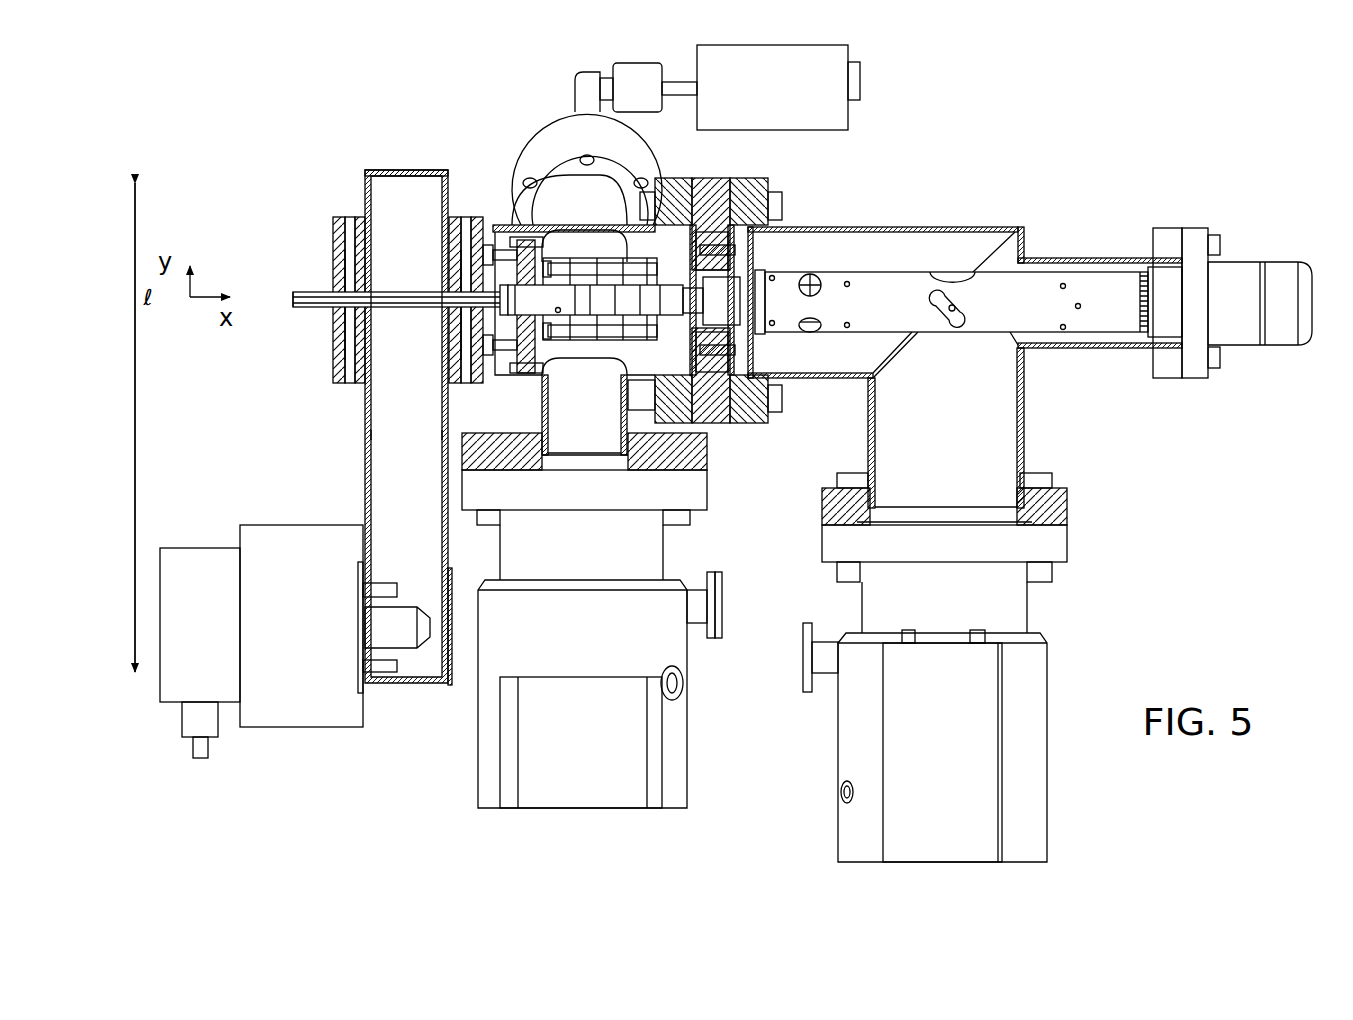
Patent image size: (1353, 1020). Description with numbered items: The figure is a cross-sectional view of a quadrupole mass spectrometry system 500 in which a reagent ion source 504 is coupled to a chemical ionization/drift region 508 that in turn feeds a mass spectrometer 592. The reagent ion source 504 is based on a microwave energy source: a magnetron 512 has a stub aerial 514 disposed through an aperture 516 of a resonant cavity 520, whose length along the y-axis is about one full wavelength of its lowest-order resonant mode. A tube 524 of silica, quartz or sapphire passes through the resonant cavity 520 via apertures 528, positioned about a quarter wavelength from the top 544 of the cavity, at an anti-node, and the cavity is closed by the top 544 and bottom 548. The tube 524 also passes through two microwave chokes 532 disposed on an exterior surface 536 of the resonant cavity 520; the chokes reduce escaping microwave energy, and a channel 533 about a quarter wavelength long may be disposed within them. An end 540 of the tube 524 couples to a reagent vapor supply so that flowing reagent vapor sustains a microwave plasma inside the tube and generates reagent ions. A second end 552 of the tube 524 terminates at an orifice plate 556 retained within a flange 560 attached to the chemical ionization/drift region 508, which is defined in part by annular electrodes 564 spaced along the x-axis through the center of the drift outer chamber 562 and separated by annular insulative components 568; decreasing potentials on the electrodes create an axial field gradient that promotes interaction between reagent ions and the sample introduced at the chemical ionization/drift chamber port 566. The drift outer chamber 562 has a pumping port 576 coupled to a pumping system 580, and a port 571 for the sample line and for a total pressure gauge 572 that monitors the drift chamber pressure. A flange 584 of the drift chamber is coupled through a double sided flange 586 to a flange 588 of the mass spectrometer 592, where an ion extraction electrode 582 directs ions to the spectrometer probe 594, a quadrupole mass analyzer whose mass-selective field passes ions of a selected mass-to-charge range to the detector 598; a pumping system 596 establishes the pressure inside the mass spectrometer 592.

The quadrupole mass spectrometry system 500 is at (1176, 126).
The reagent ion source 504 is at (372, 410).
The chemical ionization/drift region 508 is at (584, 290).
The magnetron 512 is at (300, 716).
The stub aerial 514 is at (378, 630).
The aperture 516 is at (357, 614).
The resonant cavity 520 is at (372, 436).
The tube 524 is at (315, 291).
The apertures 528 is at (425, 291).
The microwave chokes 532 is at (453, 252).
The channel 533 is at (467, 363).
The exterior surface 536 is at (366, 196).
The end 540 is at (296, 309).
The top 544 is at (368, 170).
The bottom 548 is at (428, 686).
The second end 552 is at (507, 342).
The orifice plate 556 is at (500, 226).
The flange 560 is at (503, 250).
The drift outer chamber 562 is at (586, 344).
The annular electrodes 564 is at (607, 300).
The chemical ionization/drift chamber port 566 is at (558, 315).
The annular insulative components 568 is at (690, 402).
The port 571 is at (560, 135).
The total pressure gauge 572 is at (848, 76).
The pumping port 576 is at (565, 426).
The pumping system 580 is at (545, 670).
The ion extraction electrode 582 is at (782, 400).
The flange 584 is at (705, 178).
The double sided flange 586 is at (712, 198).
The flange 588 is at (750, 203).
The mass spectrometer 592 is at (866, 240).
The spectrometer probe 594 is at (920, 282).
The pumping system 596 is at (1030, 608).
The detector 598 is at (1242, 272).